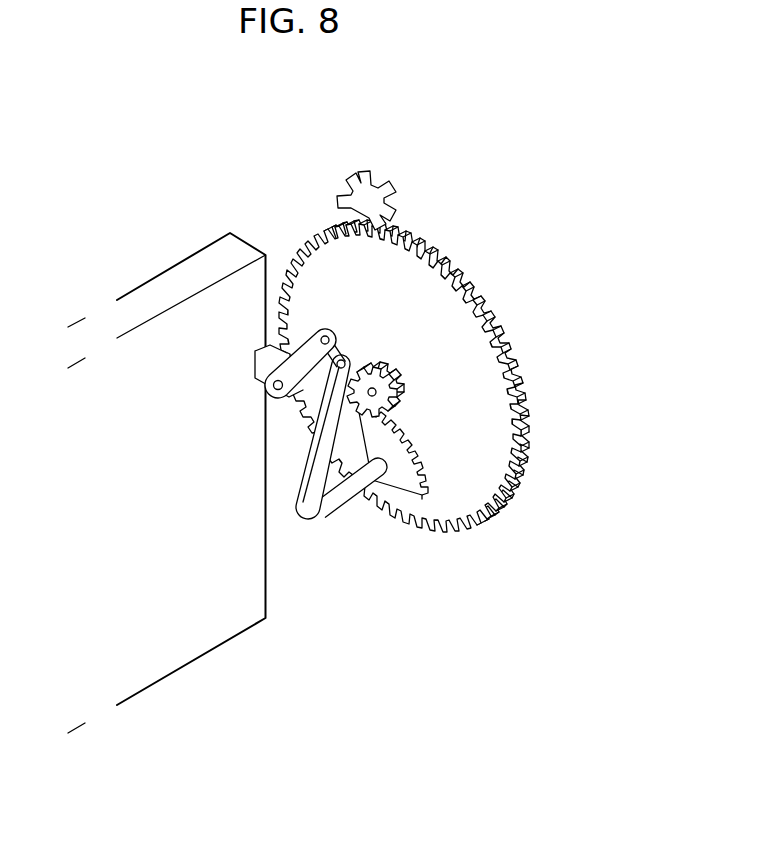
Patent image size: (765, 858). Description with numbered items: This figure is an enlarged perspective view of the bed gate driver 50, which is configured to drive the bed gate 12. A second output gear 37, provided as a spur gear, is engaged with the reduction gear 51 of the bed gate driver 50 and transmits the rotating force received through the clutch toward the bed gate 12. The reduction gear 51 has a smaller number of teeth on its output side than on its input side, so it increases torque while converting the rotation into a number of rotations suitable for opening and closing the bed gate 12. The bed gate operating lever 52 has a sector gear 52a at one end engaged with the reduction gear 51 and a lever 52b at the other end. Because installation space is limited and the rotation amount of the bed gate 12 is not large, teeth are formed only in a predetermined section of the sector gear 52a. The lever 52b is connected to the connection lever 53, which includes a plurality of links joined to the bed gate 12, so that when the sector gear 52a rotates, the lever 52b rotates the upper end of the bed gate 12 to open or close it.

The bed gate 12 is at (172, 565).
The second output gear 37 is at (356, 199).
The bed gate driver 50 is at (515, 314).
The reduction gear 51 is at (465, 397).
The bed gate operating lever 52 is at (343, 516).
The sector gear 52a is at (428, 470).
The lever 52b is at (306, 516).
The connection lever 53 is at (287, 367).